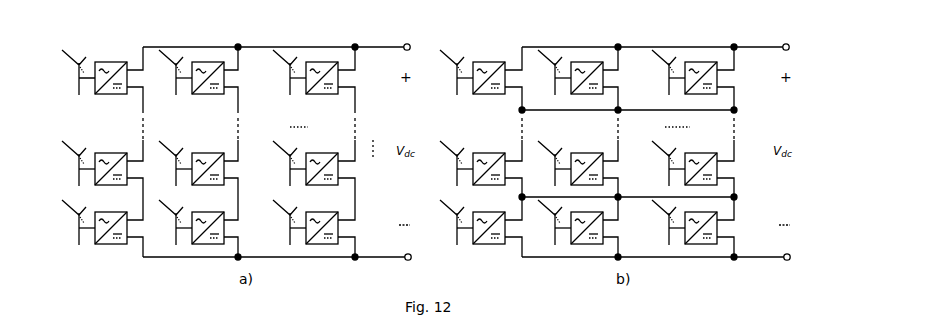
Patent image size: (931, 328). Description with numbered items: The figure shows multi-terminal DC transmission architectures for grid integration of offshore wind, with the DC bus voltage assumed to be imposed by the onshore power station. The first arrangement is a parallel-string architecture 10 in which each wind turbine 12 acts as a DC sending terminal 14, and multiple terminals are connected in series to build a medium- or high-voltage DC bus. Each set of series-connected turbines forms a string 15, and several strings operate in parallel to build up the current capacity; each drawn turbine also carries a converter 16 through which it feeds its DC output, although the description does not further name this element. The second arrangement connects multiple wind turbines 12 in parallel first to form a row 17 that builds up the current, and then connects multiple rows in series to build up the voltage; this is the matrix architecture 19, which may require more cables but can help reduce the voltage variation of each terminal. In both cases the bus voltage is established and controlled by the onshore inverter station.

The architecture 10 is at (273, 128).
The wind turbine 12 is at (78, 92).
The DC sending terminal 14 is at (272, 85).
The string 15 is at (153, 123).
The AC/DC converter 16 is at (112, 95).
The row 17 is at (735, 63).
The matrix architecture 19 is at (668, 156).